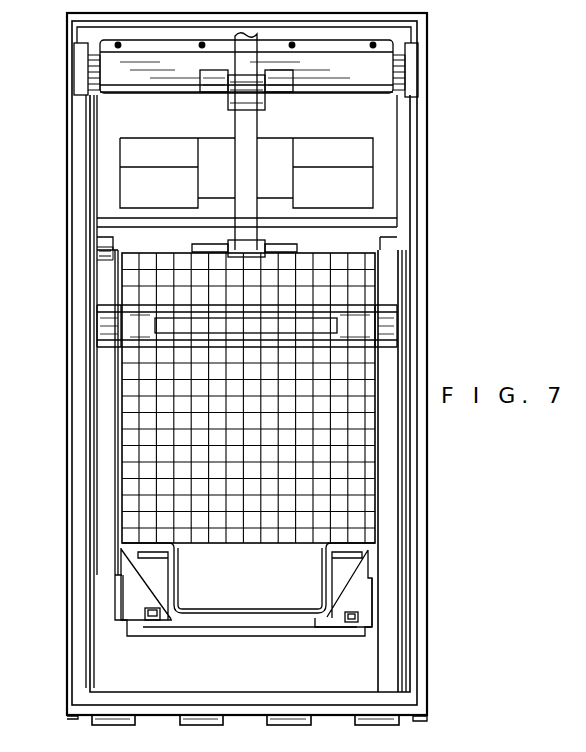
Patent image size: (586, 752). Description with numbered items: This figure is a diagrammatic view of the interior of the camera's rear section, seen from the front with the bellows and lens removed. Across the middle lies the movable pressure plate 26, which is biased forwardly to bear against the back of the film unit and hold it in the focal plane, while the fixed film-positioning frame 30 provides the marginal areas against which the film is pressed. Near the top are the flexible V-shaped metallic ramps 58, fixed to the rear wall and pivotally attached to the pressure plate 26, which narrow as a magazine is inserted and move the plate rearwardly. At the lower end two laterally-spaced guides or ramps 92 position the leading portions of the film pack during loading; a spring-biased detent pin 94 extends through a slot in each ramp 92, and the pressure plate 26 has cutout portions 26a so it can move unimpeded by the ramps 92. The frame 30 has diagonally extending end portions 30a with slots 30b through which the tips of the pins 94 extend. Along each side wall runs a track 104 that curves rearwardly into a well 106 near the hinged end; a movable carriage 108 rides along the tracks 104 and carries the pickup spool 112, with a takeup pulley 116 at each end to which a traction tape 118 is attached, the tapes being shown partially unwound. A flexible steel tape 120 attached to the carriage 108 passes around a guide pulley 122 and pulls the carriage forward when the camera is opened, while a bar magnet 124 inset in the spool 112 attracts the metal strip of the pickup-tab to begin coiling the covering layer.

The pressure plate 26 is at (138, 498).
The cutout portions 26a is at (357, 548).
The film-positioning frame 30 is at (107, 273).
The diagonally extending end portions 30a is at (132, 590).
The slots 30b is at (158, 620).
The V-shaped metallic ramps 58 is at (135, 185).
The guides or ramps 92 is at (150, 562).
The detent pin 94 is at (152, 620).
The tracks 104 is at (87, 450).
The well 106 is at (353, 663).
The movable carriage 108 is at (405, 295).
The pickup spool 112 is at (93, 323).
The takeup pulley or reel 116 is at (93, 328).
The traction tape 118 is at (385, 482).
The flexible steel tape 120 is at (245, 127).
The guide pulley 122 is at (238, 97).
The bar magnet 124 is at (328, 332).